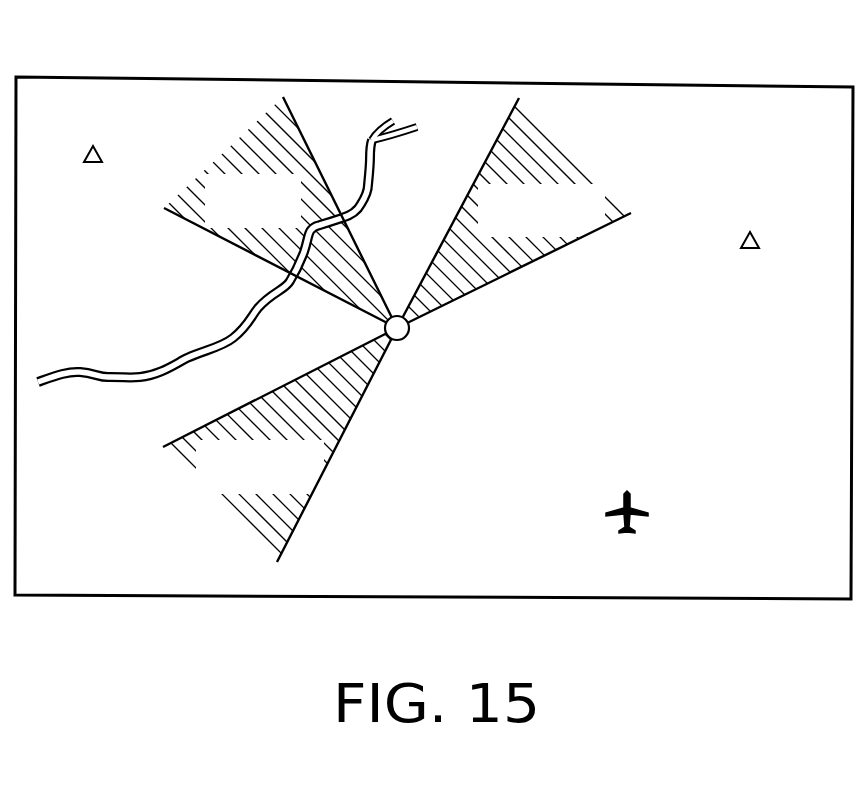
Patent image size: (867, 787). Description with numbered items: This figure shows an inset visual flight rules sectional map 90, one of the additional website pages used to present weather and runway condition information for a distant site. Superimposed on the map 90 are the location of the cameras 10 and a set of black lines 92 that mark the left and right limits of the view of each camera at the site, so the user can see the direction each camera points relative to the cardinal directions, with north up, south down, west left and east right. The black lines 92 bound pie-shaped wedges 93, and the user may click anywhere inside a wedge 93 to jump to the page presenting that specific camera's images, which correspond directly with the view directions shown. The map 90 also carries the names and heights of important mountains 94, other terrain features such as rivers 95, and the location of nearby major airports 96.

The visual flight rules sectional map 90 is at (437, 82).
The pie-shaped wedges 93 is at (210, 170).
The black lines 92 is at (232, 248).
The cameras 10 is at (400, 345).
The mountains 94 is at (81, 195).
The rivers 95 is at (117, 371).
The major airports 96 is at (712, 488).